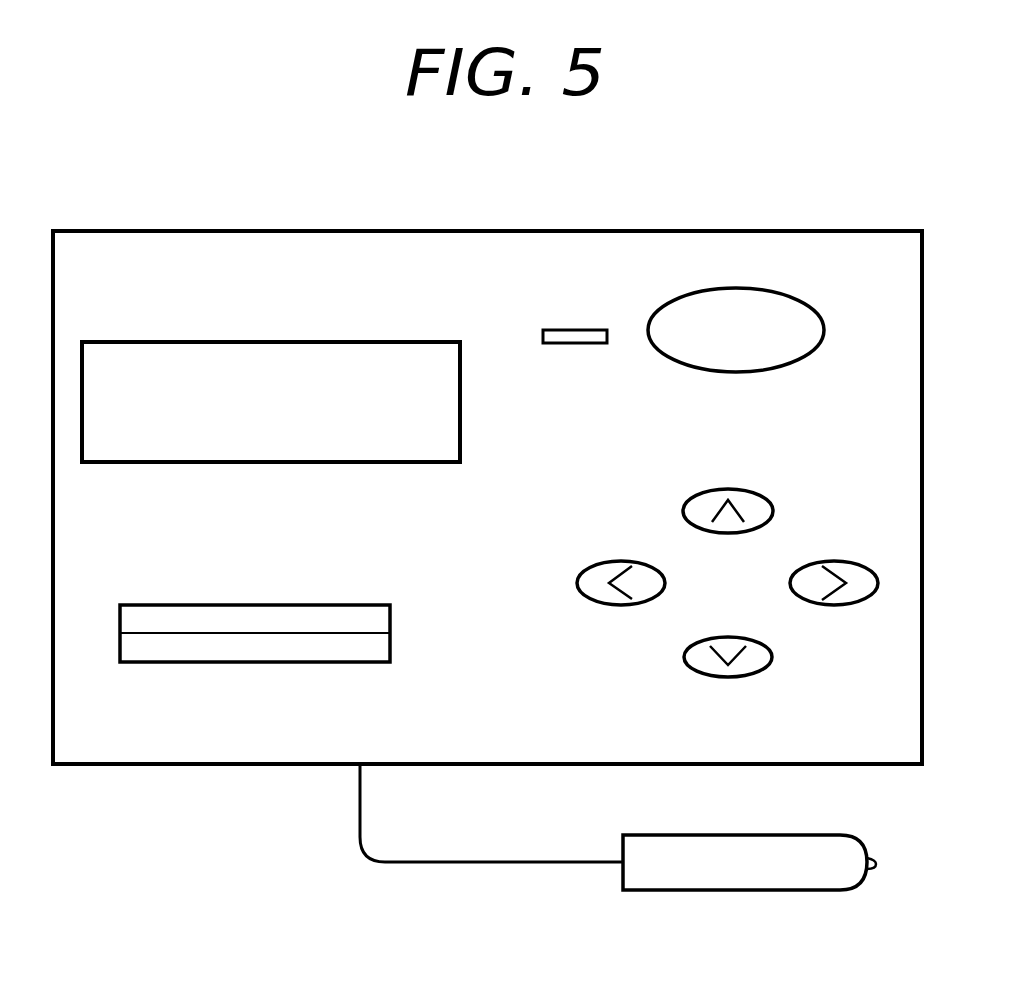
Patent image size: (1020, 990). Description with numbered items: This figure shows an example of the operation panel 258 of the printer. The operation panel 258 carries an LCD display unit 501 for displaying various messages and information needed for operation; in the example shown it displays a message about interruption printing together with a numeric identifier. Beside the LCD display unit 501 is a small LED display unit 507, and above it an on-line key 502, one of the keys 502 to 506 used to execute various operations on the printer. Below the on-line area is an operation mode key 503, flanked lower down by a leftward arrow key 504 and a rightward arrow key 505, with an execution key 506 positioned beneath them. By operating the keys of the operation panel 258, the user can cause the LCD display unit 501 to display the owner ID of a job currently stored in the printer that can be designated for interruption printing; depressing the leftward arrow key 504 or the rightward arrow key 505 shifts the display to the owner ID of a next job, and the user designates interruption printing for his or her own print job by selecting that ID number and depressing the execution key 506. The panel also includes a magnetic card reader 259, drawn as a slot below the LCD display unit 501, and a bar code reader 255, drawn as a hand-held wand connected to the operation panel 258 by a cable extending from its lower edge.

The operation panel 258 is at (163, 231).
The LCD display unit 501 is at (373, 342).
The LED display unit 507 is at (583, 330).
The key 502 is at (805, 302).
The key 503 is at (773, 510).
The leftward arrow key 504 is at (612, 605).
The rightward arrow key 505 is at (843, 605).
The execution key 506 is at (740, 676).
The magnetic card reader 259 is at (327, 605).
The bar code reader 255 is at (785, 835).